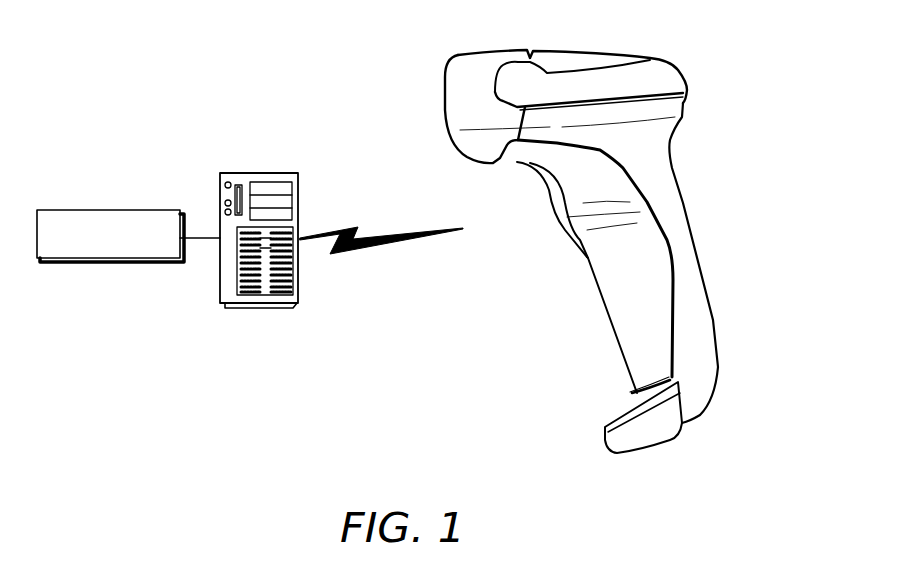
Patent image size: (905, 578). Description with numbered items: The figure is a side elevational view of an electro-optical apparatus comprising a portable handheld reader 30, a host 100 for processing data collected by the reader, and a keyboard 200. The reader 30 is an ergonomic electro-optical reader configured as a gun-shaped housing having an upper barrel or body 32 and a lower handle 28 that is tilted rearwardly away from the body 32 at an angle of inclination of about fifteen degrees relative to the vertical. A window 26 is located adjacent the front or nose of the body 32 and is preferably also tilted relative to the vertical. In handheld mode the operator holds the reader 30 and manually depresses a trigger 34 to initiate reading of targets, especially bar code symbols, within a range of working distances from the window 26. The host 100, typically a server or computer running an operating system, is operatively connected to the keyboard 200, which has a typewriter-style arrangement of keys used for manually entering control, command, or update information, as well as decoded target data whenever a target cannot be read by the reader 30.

The electro-optical reader 30 is at (779, 25).
The body 32 is at (597, 60).
The window 26 is at (442, 90).
The trigger 34 is at (557, 213).
The handle 28 is at (705, 277).
The host 100 is at (260, 173).
The keyboard 200 is at (108, 210).